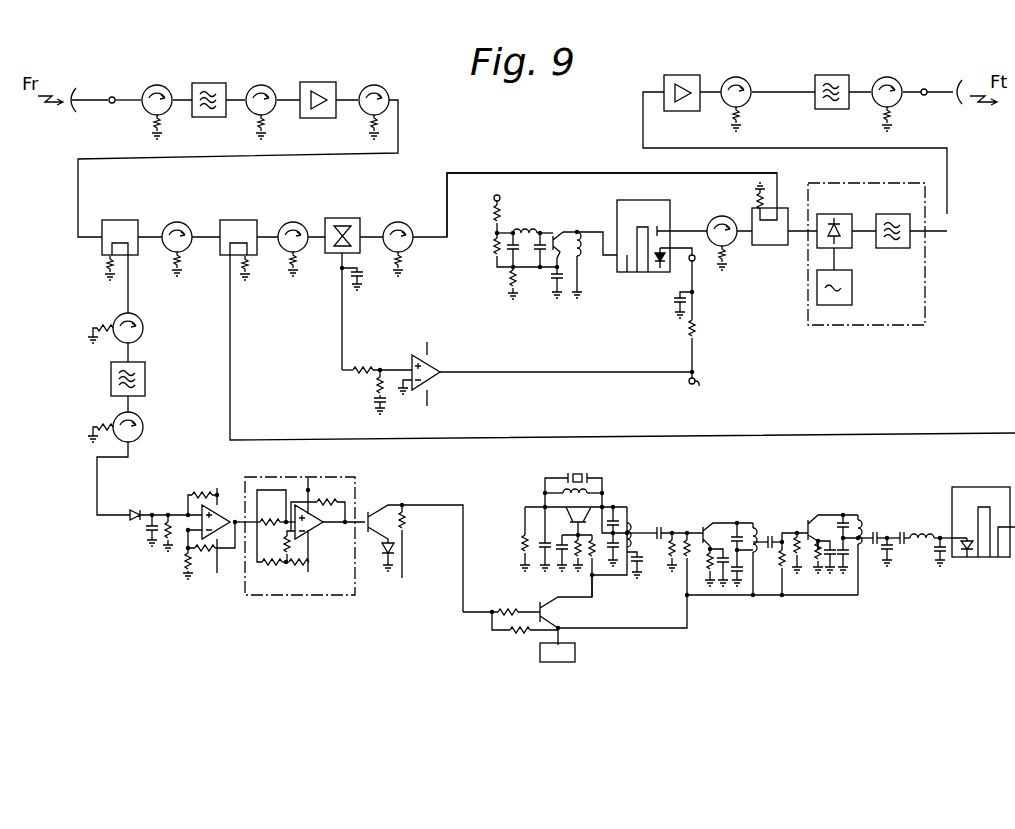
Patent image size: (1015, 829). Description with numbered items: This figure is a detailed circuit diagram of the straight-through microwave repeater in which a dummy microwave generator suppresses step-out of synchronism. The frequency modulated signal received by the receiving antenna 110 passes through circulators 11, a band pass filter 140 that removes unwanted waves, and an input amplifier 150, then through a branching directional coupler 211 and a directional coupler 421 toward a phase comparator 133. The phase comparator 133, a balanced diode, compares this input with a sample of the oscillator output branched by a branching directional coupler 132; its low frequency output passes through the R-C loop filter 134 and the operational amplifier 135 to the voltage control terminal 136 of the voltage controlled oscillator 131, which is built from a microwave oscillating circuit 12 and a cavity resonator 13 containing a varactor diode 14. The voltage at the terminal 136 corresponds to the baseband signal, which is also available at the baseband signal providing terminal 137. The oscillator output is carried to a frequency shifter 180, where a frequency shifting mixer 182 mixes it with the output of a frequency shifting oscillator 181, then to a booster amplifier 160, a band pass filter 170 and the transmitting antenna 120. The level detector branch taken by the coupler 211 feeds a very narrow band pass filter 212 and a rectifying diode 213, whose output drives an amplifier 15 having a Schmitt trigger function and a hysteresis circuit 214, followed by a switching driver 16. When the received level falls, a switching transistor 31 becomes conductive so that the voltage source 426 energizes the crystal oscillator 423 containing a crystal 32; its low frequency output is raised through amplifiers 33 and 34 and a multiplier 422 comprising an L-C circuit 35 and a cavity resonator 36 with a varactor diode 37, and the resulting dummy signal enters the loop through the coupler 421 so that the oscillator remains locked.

The receiving antenna 110 is at (80, 84).
The circulator 11 is at (157, 427).
The band pass filter 140 is at (209, 83).
The input amplifier 150 is at (319, 82).
The booster amplifier 160 is at (683, 75).
The band pass filter 170 is at (834, 75).
The transmitting antenna 120 is at (955, 78).
The branching directional coupler 211 is at (117, 220).
The directional coupler 421 is at (236, 220).
The phase comparator 133 is at (343, 218).
The loop filter 134 is at (370, 357).
The low frequency amplifier 135 is at (437, 364).
The voltage controlled oscillator 131 is at (540, 162).
The microwave oscillating circuit 12 is at (536, 230).
The cavity resonator 13 is at (633, 200).
The varactor diode 14 is at (663, 270).
The voltage control terminal 136 is at (695, 260).
The baseband signal providing terminal 137 is at (707, 388).
The branching directional coupler 132 is at (773, 245).
The frequency shifter 180 is at (877, 237).
The frequency shifting mixer 182 is at (836, 214).
The frequency shifting oscillator 181 is at (852, 294).
The band pass filter 212 is at (146, 379).
The rectifying diode 213 is at (137, 503).
The amplifier 15 is at (191, 479).
The hysteresis circuit 214 is at (275, 477).
The switching driver 16 is at (400, 498).
The switching transistor 31 is at (555, 608).
The voltage source 426 is at (575, 652).
The crystal oscillator 423 is at (611, 518).
The crystal 32 is at (583, 472).
The amplifier 33 is at (718, 519).
The amplifier 34 is at (804, 506).
The L-C circuit 35 is at (926, 524).
The multiplier 422 is at (922, 542).
The cavity resonator 36 is at (983, 525).
The varactor diode 37 is at (967, 558).